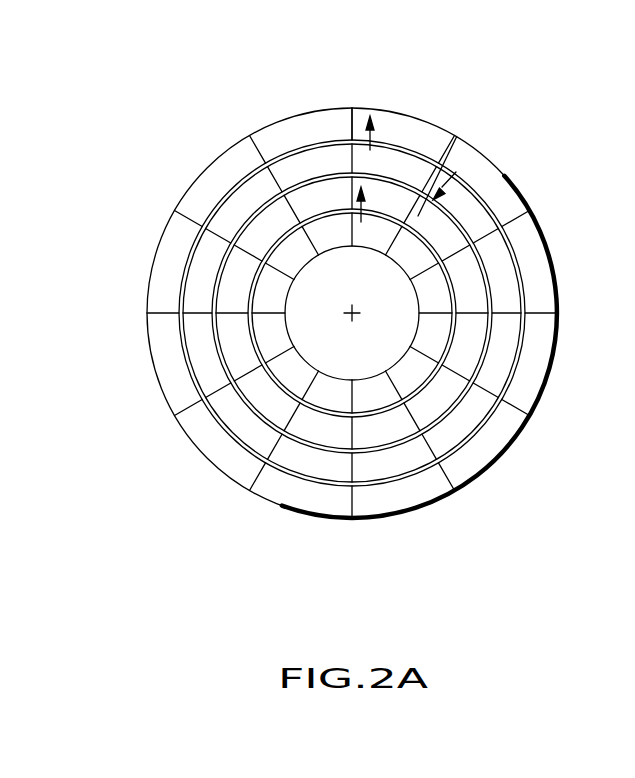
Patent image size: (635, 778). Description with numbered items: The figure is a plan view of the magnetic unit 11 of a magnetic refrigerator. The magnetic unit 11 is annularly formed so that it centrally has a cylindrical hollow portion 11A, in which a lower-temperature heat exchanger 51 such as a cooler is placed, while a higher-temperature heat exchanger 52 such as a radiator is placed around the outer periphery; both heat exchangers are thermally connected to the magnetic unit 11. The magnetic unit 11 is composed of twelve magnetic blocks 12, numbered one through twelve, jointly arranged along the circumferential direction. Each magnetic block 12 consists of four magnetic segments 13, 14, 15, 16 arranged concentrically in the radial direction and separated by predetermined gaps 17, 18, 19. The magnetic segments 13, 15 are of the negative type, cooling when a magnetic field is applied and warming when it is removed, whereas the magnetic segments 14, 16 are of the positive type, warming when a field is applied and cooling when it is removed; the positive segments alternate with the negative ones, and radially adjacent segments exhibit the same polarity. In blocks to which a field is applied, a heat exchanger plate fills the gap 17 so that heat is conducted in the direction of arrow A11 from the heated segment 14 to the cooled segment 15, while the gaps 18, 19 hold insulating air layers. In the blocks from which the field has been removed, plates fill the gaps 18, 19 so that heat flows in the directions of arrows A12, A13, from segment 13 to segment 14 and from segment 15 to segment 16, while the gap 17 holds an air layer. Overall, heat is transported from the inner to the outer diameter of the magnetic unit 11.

The magnetic unit 11 is at (150, 236).
The cylindrical hollow portion 11A is at (312, 356).
The magnetic block 12 is at (511, 183).
The magnetic segment 13 is at (352, 313).
The magnetic segment 14 is at (352, 313).
The magnetic segment 15 is at (352, 313).
The magnetic segment 16 is at (352, 300).
The gap 17 is at (457, 230).
The gap 18 is at (405, 219).
The gap 19 is at (386, 142).
The arrow A11 is at (441, 190).
The arrow A12 is at (358, 191).
The arrow A13 is at (367, 127).
The lower-temperature heat exchanger 51 is at (402, 325).
The higher-temperature heat exchanger 52 is at (161, 178).